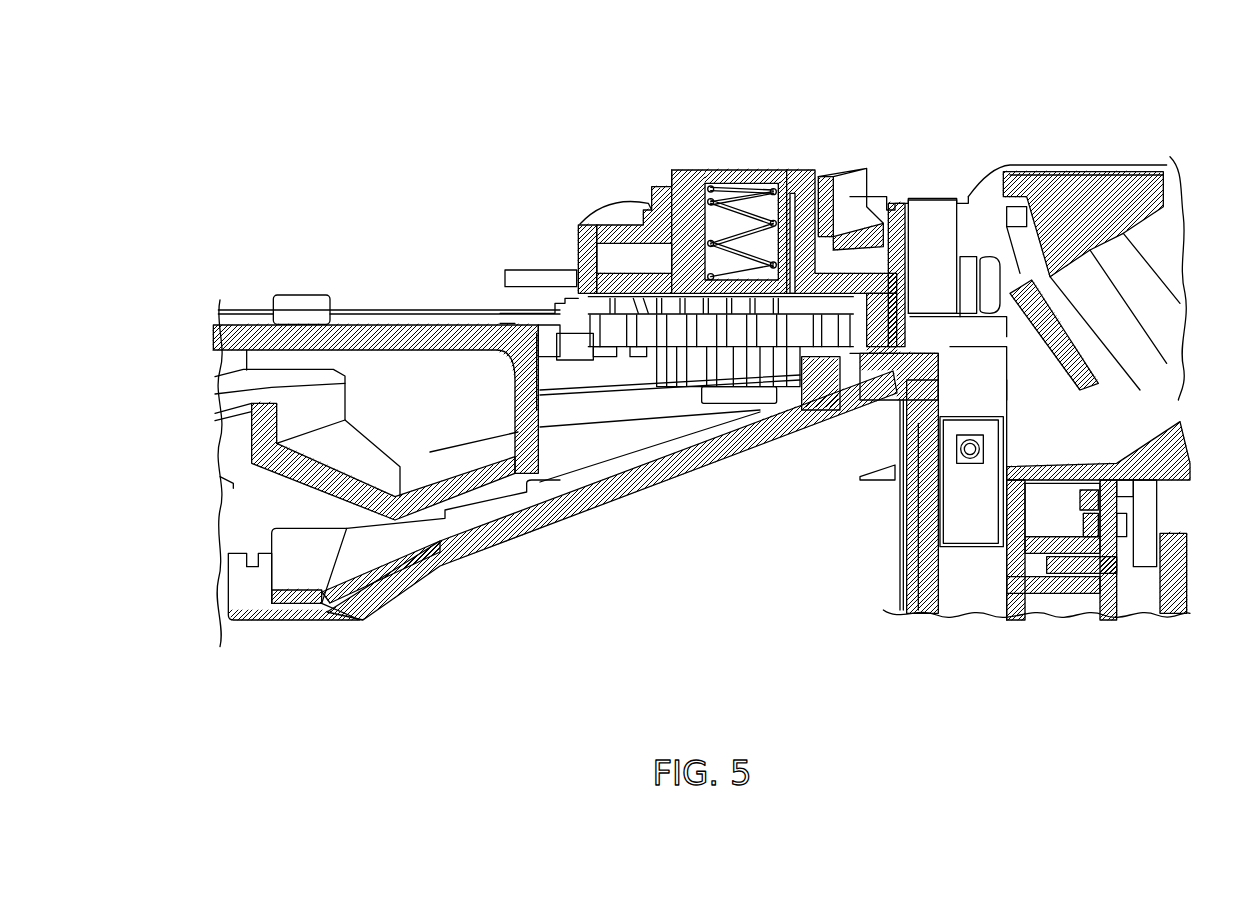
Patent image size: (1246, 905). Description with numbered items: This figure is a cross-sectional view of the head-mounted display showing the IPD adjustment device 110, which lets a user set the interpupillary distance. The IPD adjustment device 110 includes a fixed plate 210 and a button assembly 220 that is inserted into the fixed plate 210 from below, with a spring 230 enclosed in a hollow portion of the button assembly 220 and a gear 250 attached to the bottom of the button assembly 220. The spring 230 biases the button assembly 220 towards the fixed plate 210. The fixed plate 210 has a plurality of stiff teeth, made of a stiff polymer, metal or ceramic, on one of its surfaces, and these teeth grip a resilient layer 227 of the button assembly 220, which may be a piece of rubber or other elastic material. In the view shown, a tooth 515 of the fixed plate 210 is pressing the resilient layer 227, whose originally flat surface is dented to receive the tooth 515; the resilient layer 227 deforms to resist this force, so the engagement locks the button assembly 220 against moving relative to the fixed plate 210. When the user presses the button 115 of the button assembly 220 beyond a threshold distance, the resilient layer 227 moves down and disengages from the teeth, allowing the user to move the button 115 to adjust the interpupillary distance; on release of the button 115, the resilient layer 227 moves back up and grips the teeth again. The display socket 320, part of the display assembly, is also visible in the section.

The IPD adjustment device 110 is at (360, 300).
The resilient layer 227 is at (585, 248).
The tooth 515 is at (593, 221).
The gear 250 is at (692, 327).
The spring 230 is at (720, 188).
The button 115 is at (755, 168).
The button assembly 220 is at (788, 168).
The fixed plate 210 is at (860, 183).
The display socket 320 is at (720, 443).